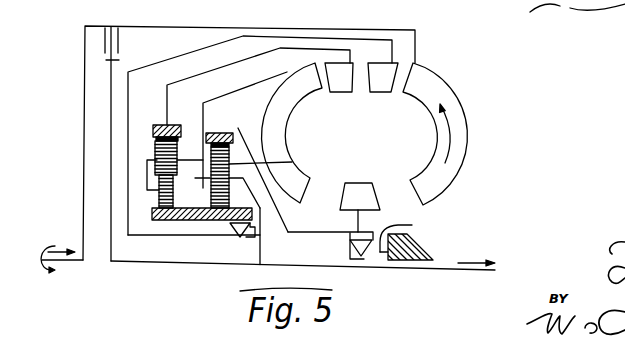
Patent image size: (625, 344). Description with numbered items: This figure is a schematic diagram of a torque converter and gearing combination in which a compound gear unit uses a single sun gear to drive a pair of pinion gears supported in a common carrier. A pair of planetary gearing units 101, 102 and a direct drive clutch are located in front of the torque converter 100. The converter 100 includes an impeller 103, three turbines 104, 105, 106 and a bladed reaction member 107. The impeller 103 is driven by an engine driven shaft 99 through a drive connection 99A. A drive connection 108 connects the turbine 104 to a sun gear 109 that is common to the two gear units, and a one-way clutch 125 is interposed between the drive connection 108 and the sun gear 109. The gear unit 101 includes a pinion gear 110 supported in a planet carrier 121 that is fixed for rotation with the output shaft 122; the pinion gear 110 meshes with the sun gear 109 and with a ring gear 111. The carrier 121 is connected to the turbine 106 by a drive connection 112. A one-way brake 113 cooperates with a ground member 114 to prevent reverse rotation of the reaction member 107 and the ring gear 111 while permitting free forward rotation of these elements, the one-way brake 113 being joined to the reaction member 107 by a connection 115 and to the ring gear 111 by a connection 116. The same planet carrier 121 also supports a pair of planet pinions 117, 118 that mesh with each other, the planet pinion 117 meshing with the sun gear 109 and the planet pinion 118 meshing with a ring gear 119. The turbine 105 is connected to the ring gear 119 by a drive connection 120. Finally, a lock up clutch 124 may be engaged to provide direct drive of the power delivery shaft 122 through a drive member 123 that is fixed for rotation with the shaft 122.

The engine driven shaft 99 is at (62, 262).
The drive connection 99A is at (168, 26).
The torque converter 100 is at (391, 134).
The planetary gearing unit 101 is at (233, 148).
The planetary gearing unit 102 is at (165, 145).
The impeller 103 is at (436, 120).
The turbine 104 is at (378, 82).
The turbine 105 is at (340, 82).
The turbine 106 is at (286, 121).
The bladed reaction member 107 is at (357, 185).
The drive connection 108 is at (180, 55).
The sun gear 109 is at (189, 221).
The pinion gear 110 is at (292, 162).
The ring gear 111 is at (217, 133).
The drive connection 112 is at (240, 69).
The one-way brake 113 is at (348, 242).
The ground member 114 is at (395, 234).
The connection 115 is at (360, 222).
The connection 116 is at (280, 211).
The planet pinion 117 is at (173, 193).
The planet pinion 118 is at (157, 146).
The ring gear 119 is at (172, 126).
The drive connection 120 is at (229, 66).
The planet carrier 121 is at (147, 172).
The output shaft 122 is at (261, 249).
The drive member 123 is at (111, 122).
The lock up clutch 124 is at (102, 43).
The one-way clutch 125 is at (246, 234).